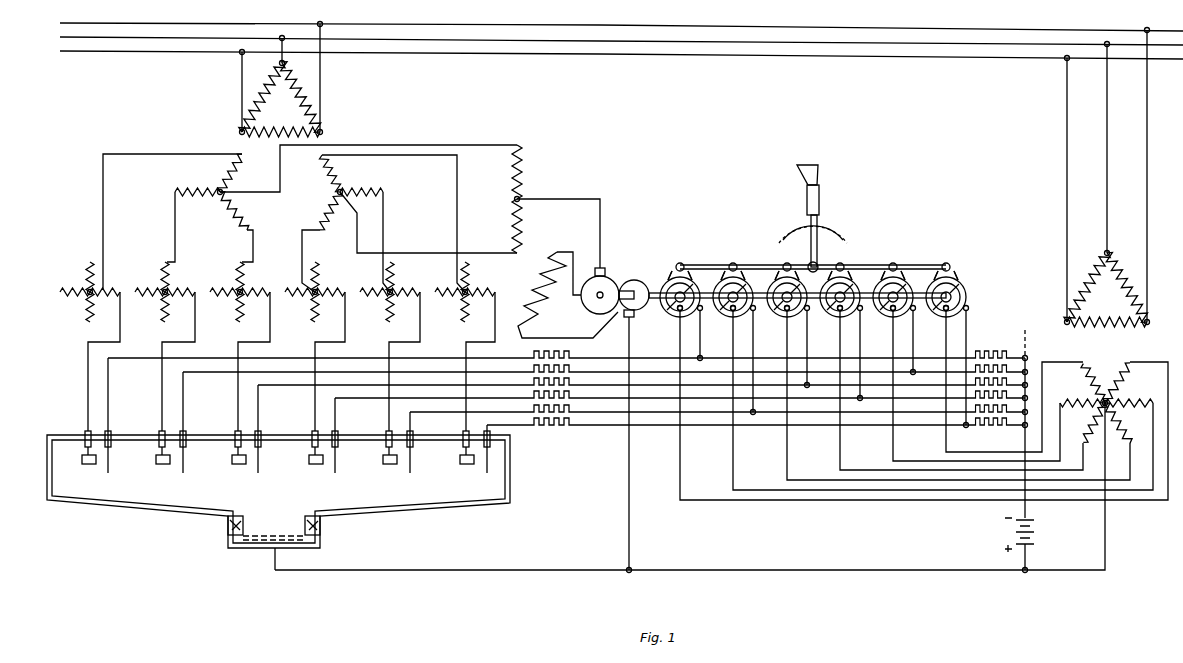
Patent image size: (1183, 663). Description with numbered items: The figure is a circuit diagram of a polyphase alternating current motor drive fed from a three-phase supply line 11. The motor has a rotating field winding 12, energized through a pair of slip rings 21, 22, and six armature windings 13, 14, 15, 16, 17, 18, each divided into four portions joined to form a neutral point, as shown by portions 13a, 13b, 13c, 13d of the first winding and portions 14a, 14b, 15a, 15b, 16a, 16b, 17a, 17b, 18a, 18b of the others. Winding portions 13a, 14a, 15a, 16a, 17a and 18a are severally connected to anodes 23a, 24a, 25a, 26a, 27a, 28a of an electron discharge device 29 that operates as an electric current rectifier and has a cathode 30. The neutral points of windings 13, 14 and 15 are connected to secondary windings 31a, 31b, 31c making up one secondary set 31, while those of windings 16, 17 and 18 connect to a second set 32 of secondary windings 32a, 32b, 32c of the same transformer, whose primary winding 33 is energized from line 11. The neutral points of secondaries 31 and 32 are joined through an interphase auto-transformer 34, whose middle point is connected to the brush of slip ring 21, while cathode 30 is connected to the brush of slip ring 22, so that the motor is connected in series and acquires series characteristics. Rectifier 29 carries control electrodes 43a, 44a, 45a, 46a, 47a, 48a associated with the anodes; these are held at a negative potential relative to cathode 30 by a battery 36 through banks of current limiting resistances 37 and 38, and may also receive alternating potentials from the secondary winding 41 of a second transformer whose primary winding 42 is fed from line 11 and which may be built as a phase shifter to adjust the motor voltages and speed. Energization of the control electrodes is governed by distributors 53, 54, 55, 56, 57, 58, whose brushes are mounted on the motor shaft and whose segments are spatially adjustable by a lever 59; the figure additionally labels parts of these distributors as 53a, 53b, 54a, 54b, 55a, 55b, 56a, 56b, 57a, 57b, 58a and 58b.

The polyphase alternating current supply line 11 is at (623, 43).
The field winding 12 is at (545, 304).
The armature winding 13 is at (74, 298).
The armature winding portion 13a is at (110, 288).
The armature winding portion 13b is at (86, 313).
The armature winding portion 13c is at (78, 287).
The armature winding portion 13d is at (86, 260).
The armature winding 14 is at (155, 275).
The armature winding portion 14a is at (184, 288).
The armature winding portion 14b is at (158, 313).
The armature winding 15 is at (230, 275).
The armature winding portion 15a is at (260, 288).
The armature winding portion 15b is at (232, 313).
The armature winding 16 is at (341, 265).
The armature winding portion 16a is at (344, 288).
The armature winding portion 16b is at (308, 313).
The armature winding 17 is at (374, 275).
The armature winding portion 17a is at (406, 288).
The armature winding portion 17b is at (384, 313).
The armature winding 18 is at (447, 275).
The armature winding portion 18a is at (488, 288).
The armature winding portion 18b is at (460, 313).
The slip ring 21 is at (606, 274).
The slip ring 22 is at (636, 279).
The anode 23a is at (84, 465).
The anode 24a is at (156, 465).
The anode 25a is at (232, 465).
The anode 26a is at (309, 465).
The anode 27a is at (383, 465).
The anode 28a is at (460, 465).
The electron discharge device 29 is at (382, 514).
The cathode 30 is at (320, 538).
The secondary winding set 31 is at (200, 181).
The secondary winding 31a is at (236, 188).
The secondary winding 31b is at (197, 196).
The secondary winding 31c is at (241, 220).
The secondary winding set 32 is at (313, 202).
The secondary winding 32a is at (334, 178).
The secondary winding 32b is at (327, 228).
The secondary winding 32c is at (378, 194).
The primary winding 33 is at (282, 113).
The interphase transformer 34 is at (524, 178).
The battery 36 is at (1036, 528).
The bank of current limiting resistances 37 is at (997, 352).
The bank of current limiting resistances 38 is at (557, 455).
The secondary winding 41 is at (1147, 392).
The primary winding 42 is at (1112, 309).
The control electrode 43a is at (103, 476).
The control electrode 44a is at (178, 476).
The control electrode 45a is at (253, 476).
The control electrode 46a is at (330, 476).
The control electrode 47a is at (405, 476).
The control electrode 48a is at (483, 476).
The distributor 53 is at (692, 258).
The brush 53a is at (690, 286).
The contact 53b is at (678, 313).
The distributor 54 is at (745, 258).
The brush 54a is at (743, 286).
The contact 54b is at (731, 313).
The distributor 55 is at (799, 258).
The brush 55a is at (800, 288).
The contact 55b is at (785, 313).
The distributor 56 is at (852, 258).
The brush 56a is at (850, 288).
The contact 56b is at (838, 313).
The distributor 57 is at (905, 258).
The brush 57a is at (906, 288).
The contact 57b is at (891, 313).
The distributor 58 is at (959, 258).
The brush 58a is at (968, 302).
The contact 58b is at (944, 313).
The lever 59 is at (819, 177).